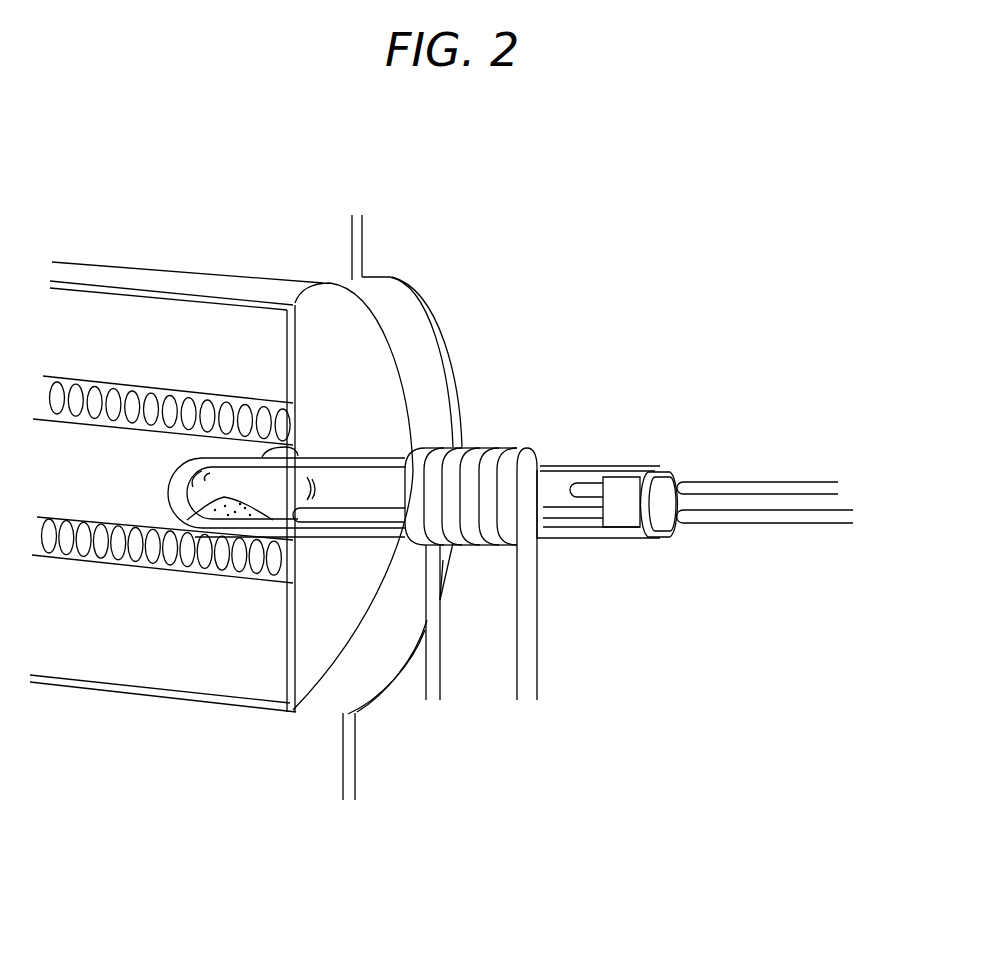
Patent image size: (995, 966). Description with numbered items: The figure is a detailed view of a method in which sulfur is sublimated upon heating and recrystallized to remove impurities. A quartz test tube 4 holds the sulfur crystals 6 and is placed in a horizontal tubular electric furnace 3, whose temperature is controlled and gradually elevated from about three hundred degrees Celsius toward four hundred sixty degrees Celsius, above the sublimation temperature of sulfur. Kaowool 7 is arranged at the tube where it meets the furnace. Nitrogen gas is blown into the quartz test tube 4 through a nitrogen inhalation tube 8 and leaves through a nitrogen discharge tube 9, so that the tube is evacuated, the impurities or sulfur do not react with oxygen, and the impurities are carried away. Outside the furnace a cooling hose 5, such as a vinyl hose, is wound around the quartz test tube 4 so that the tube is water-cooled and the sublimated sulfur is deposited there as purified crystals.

The horizontal tubular electric furnace 3 is at (235, 281).
The quartz test tube 4 is at (565, 483).
The cooling hose 5 is at (486, 448).
The sulfur crystals 6 is at (167, 503).
The Kaowool 7 is at (300, 453).
The nitrogen inhalation tube 8 is at (723, 521).
The nitrogen discharge tube 9 is at (723, 485).